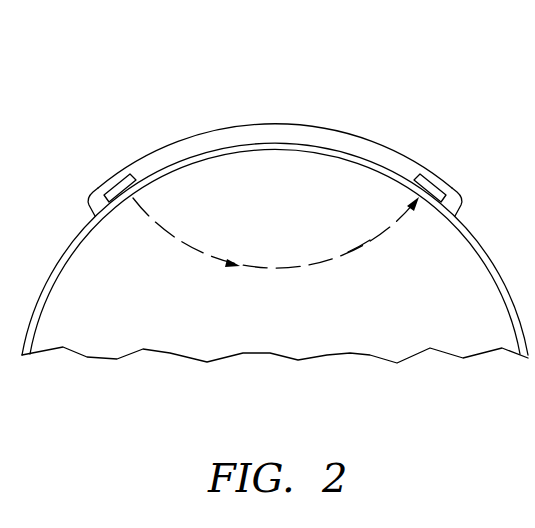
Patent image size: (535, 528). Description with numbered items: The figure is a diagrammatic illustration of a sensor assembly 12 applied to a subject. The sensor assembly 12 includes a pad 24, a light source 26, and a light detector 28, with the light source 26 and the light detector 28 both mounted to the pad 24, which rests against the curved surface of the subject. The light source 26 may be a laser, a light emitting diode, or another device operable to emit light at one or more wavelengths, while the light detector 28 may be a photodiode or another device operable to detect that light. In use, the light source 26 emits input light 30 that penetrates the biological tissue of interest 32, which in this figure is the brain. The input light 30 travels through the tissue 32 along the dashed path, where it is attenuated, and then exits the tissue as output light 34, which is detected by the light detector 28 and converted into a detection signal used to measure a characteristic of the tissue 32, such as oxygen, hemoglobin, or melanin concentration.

The sensor assembly 12 is at (221, 96).
The pad 24 is at (338, 140).
The light source 26 is at (128, 181).
The light detector 28 is at (423, 188).
The input light 30 is at (157, 224).
The biological tissue of interest 32 is at (478, 317).
The output light 34 is at (348, 252).